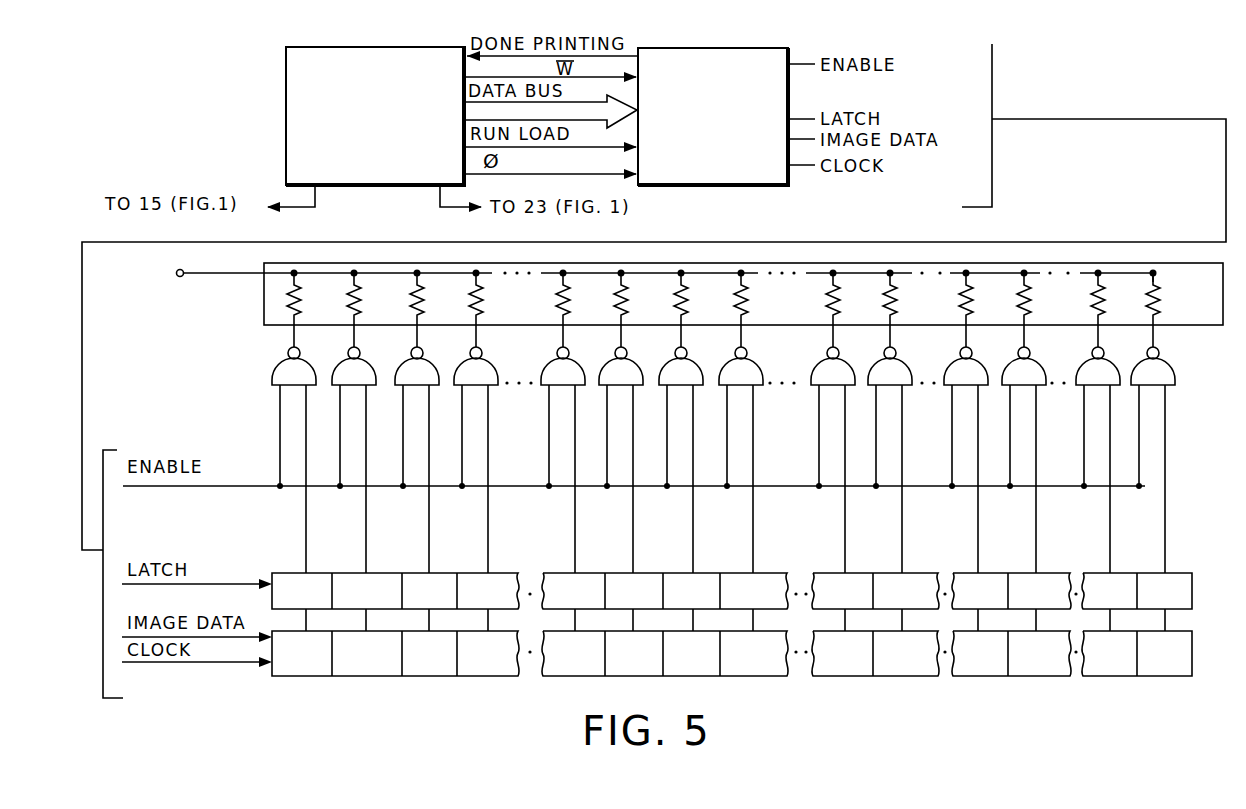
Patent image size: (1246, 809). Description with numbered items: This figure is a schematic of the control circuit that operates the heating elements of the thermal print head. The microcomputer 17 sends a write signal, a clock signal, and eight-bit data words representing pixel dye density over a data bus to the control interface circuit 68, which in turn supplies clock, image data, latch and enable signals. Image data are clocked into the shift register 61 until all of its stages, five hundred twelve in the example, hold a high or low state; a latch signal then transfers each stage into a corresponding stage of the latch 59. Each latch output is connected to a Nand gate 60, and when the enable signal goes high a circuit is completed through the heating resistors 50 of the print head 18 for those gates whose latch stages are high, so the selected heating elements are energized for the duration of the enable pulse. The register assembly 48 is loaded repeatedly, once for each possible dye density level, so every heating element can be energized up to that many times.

The microcomputer 17 is at (368, 82).
The control interface circuit 68 is at (690, 84).
The print head 18 is at (264, 290).
The heating resistors 50 is at (485, 291).
The Nand gate 60 is at (483, 358).
The latch 59 is at (490, 572).
The shift register 61 is at (1153, 691).
The shift register assembly 48 is at (735, 632).